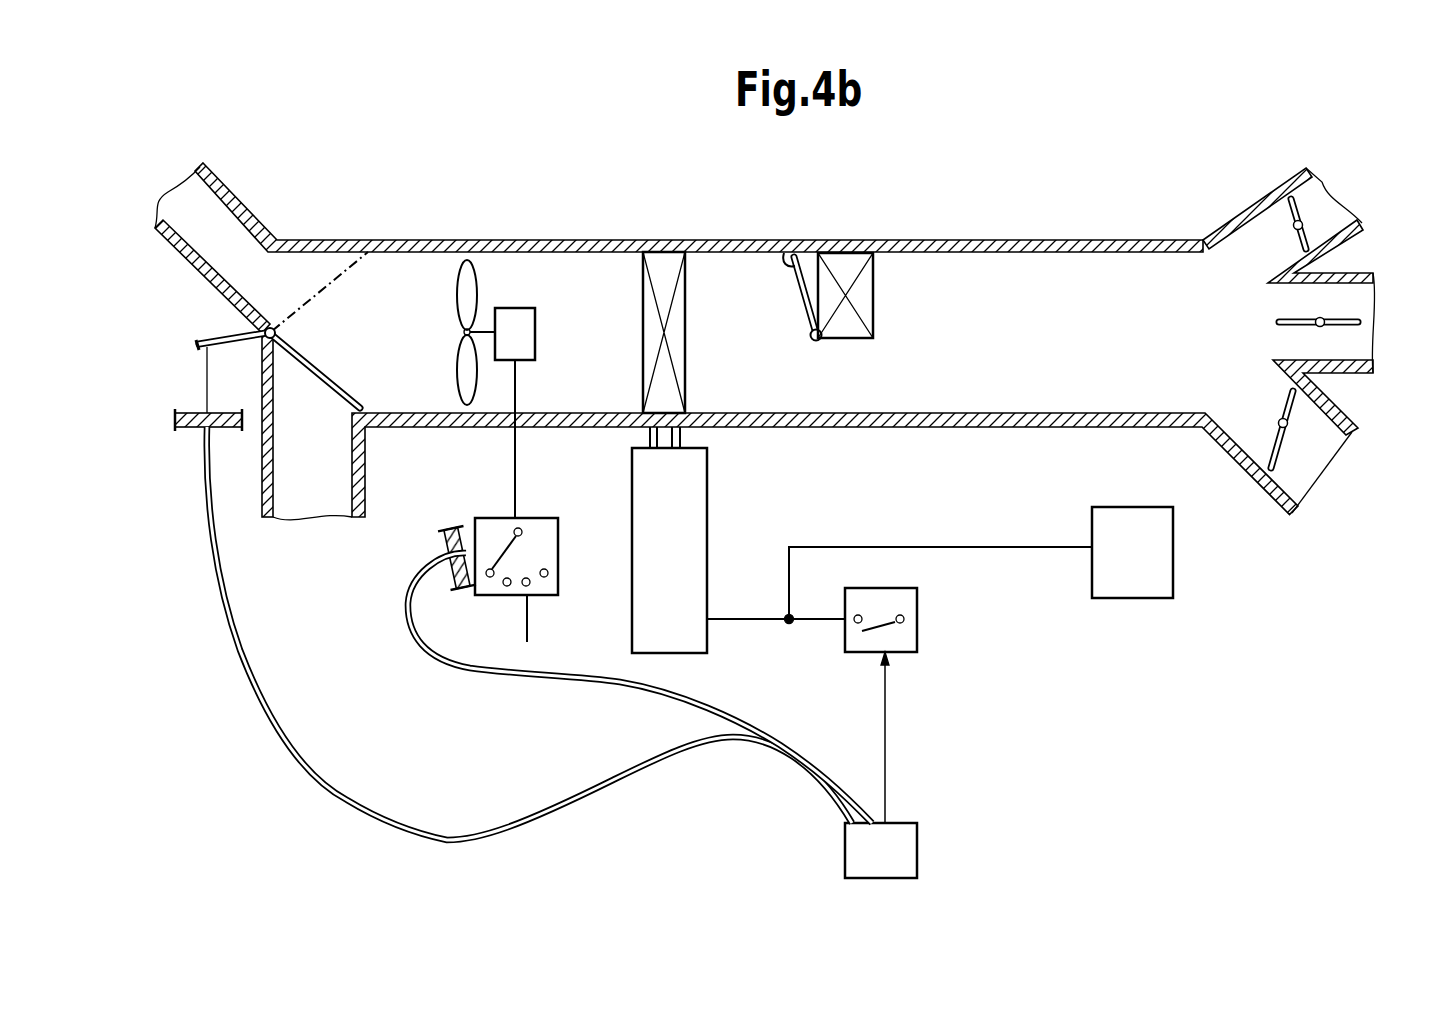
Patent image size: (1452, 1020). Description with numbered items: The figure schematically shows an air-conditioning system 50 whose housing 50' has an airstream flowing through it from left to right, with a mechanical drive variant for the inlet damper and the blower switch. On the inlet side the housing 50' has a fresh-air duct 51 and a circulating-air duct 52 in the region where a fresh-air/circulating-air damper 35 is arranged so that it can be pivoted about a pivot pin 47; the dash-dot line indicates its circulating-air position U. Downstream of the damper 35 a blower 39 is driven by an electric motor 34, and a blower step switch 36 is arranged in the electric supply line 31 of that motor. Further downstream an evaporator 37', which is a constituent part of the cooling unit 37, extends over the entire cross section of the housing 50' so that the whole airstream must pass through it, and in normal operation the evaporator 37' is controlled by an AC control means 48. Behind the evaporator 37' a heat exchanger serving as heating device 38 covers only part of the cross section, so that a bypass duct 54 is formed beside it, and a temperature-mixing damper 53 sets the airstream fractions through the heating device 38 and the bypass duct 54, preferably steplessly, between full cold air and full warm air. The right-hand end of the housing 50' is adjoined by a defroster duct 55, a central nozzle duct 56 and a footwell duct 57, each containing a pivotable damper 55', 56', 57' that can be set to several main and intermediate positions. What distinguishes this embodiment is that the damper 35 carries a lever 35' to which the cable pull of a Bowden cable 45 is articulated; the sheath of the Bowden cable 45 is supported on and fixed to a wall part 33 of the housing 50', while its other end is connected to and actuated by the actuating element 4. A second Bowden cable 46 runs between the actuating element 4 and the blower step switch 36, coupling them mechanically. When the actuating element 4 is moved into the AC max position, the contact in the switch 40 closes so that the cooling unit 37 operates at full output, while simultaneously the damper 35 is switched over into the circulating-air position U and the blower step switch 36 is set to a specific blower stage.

The actuating element 4 is at (905, 843).
The electric supply line 31 is at (517, 479).
The wall part 33 is at (195, 427).
The electric motor 34 is at (525, 330).
The fresh-air/circulating-air damper 35 is at (340, 352).
The lever 35' is at (194, 353).
The blower step switch 36 is at (492, 600).
The cooling unit 37 is at (706, 550).
The evaporator 37' is at (666, 309).
The heating device 38 is at (845, 270).
The blower 39 is at (493, 296).
The switch 40 is at (908, 634).
The Bowden cable 45 is at (485, 832).
The second Bowden cable 46 is at (465, 663).
The pivot pin 47 is at (280, 331).
The AC control means 48 is at (1162, 578).
The air-conditioning system 50 is at (746, 332).
The housing 50' is at (699, 207).
The fresh-air duct 51 is at (230, 233).
The circulating-air duct 52 is at (340, 480).
The temperature-mixing damper 53 is at (783, 255).
The bypass duct 54 is at (850, 385).
The defroster duct 55 is at (1313, 301).
The pivotable damper 55' is at (1351, 211).
The central nozzle duct 56 is at (1357, 327).
The pivotable damper 56' is at (1363, 340).
The footwell duct 57 is at (1341, 460).
The pivotable damper 57' is at (1325, 460).
The circulating-air position U is at (340, 267).